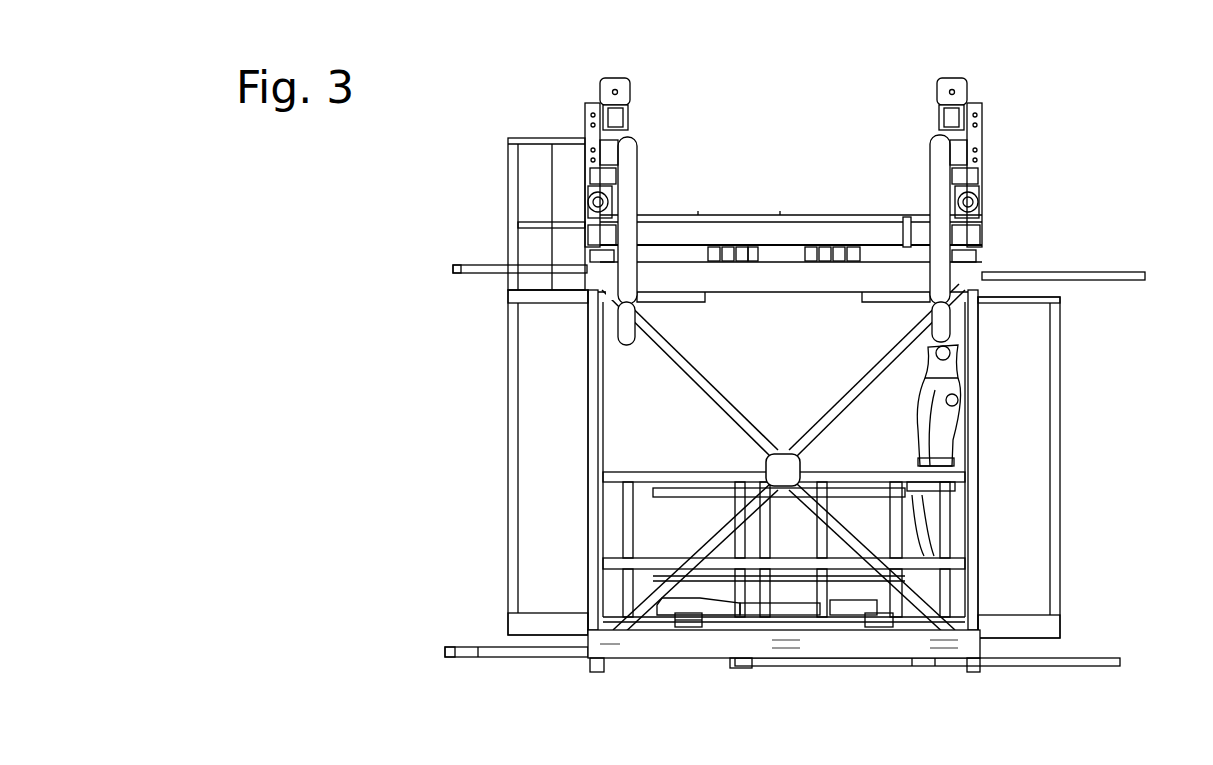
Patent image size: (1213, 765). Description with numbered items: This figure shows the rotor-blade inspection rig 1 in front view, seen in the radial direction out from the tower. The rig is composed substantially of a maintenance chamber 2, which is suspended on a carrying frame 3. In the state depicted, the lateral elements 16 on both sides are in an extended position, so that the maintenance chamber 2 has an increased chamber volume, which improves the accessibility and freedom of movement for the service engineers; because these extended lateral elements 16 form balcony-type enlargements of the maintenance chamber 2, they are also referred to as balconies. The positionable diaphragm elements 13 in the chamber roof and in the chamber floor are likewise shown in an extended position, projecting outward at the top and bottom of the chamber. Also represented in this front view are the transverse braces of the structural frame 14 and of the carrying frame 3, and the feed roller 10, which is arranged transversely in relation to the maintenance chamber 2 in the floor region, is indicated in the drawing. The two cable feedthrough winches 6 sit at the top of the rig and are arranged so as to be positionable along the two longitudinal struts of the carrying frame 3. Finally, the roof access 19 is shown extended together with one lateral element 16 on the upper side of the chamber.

The rotor-blade inspection rig 1 is at (1171, 67).
The maintenance chamber 2 is at (462, 399).
The carrying frame 3 is at (751, 233).
The cable feedthrough winches 6 is at (600, 91).
The feed roller 10 is at (715, 615).
The diaphragm elements 13 is at (500, 270).
The structural frame 14 is at (805, 660).
The lateral elements 16 is at (545, 480).
The roof access 19 is at (510, 190).